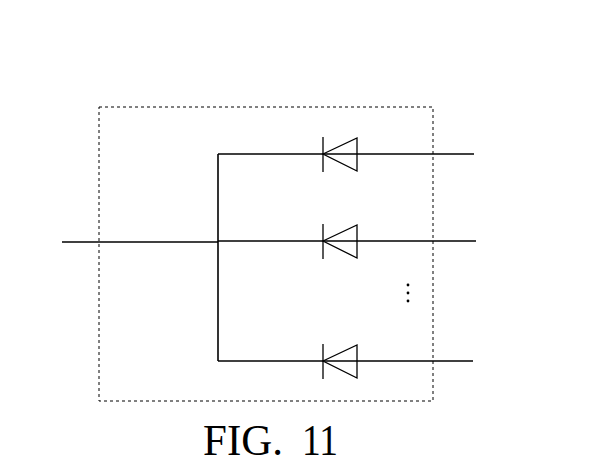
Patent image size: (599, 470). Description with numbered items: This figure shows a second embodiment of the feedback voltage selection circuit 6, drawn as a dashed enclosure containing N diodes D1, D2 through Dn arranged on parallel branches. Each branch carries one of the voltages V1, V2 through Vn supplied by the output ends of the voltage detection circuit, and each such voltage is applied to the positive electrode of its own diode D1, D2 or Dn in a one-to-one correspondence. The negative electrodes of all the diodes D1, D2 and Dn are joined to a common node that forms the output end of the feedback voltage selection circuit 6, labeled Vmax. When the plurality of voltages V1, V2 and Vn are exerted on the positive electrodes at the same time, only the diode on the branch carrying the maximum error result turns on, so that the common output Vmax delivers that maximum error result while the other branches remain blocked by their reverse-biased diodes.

The feedback voltage selection circuit 6 is at (267, 108).
The maximum error result output Vmax is at (140, 228).
The first diode D1 is at (340, 142).
The second diode D2 is at (340, 229).
The n-th diode Dn is at (340, 348).
The first input voltage V1 is at (346, 138).
The second input voltage V2 is at (347, 227).
The n-th input voltage Vn is at (345, 347).